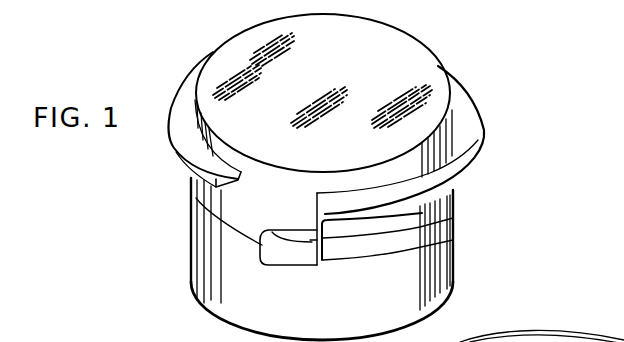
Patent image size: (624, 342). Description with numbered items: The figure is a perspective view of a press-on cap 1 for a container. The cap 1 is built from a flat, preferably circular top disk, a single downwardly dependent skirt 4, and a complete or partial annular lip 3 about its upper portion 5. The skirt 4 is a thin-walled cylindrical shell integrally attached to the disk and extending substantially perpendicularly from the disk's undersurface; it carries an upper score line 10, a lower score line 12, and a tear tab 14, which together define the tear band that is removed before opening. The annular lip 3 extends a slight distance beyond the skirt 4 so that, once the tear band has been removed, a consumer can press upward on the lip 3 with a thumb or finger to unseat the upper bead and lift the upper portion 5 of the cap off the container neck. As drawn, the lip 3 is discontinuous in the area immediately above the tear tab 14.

The cap 1 is at (383, 78).
The annular lip 3 is at (462, 143).
The skirt 4 is at (433, 276).
The upper portion 5 is at (250, 192).
The upper score line 10 is at (420, 219).
The lower score line 12 is at (440, 245).
The tear tab 14 is at (260, 252).